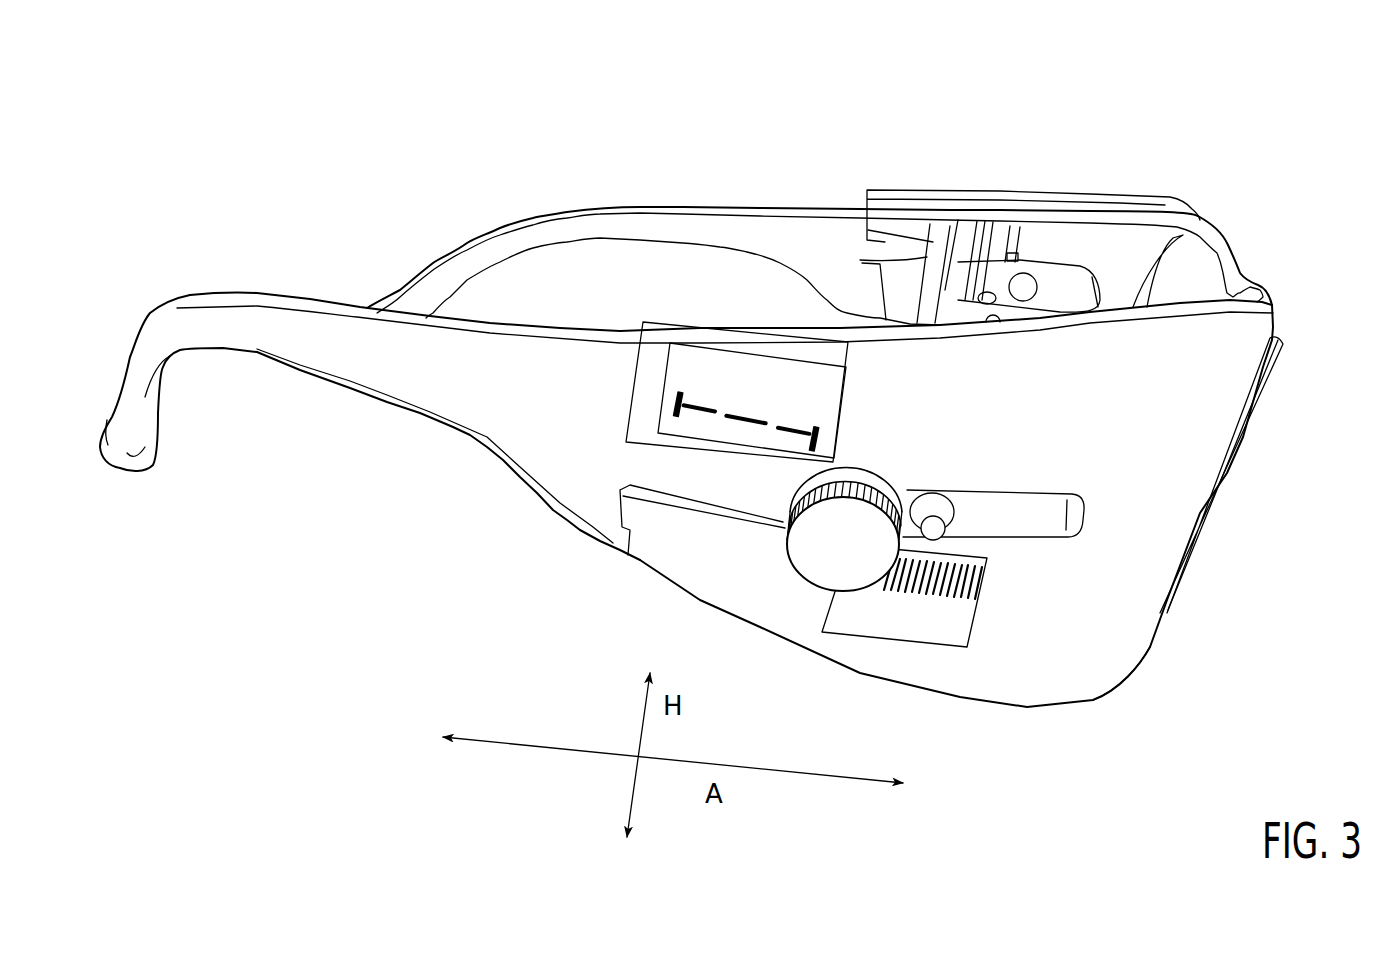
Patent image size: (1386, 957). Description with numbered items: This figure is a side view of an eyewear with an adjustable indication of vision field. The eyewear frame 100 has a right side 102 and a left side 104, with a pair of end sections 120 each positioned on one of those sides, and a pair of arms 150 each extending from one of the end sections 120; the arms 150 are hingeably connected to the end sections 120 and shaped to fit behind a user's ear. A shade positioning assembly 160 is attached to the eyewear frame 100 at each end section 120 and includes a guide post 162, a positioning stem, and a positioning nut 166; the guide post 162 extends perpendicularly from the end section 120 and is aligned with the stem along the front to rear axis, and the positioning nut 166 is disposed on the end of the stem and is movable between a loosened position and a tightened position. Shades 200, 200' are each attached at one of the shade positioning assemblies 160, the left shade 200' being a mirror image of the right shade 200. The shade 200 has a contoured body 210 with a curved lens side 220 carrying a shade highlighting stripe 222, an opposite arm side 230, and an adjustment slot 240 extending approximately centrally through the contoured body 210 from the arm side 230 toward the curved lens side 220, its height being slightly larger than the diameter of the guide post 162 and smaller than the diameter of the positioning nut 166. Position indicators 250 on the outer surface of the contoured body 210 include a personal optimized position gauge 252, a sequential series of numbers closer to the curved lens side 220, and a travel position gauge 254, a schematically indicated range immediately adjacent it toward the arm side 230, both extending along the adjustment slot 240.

The eyewear frame 100 is at (1264, 249).
The right side 102 is at (1240, 605).
The left side 104 is at (1170, 178).
The end section 120 is at (1107, 192).
The arm 150 is at (600, 233).
The shade positioning assembly 160 is at (767, 560).
The guide post 162 is at (960, 530).
The positioning nut 166 is at (815, 567).
The shade 200 is at (737, 365).
The shade 200' is at (1031, 195).
The contoured body 210 is at (1073, 640).
The curved lens side 220 is at (1225, 465).
The shade highlighting stripe 222 is at (1223, 475).
The arm side 230 is at (620, 527).
The adjustment slot 240 is at (1020, 520).
The position indicators 250 is at (907, 548).
The personal optimized position gauge 252 is at (892, 640).
The travel position gauge 254 is at (677, 390).